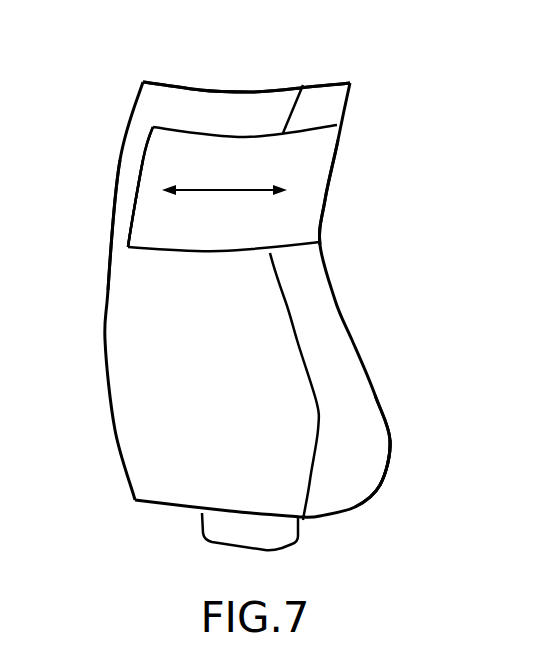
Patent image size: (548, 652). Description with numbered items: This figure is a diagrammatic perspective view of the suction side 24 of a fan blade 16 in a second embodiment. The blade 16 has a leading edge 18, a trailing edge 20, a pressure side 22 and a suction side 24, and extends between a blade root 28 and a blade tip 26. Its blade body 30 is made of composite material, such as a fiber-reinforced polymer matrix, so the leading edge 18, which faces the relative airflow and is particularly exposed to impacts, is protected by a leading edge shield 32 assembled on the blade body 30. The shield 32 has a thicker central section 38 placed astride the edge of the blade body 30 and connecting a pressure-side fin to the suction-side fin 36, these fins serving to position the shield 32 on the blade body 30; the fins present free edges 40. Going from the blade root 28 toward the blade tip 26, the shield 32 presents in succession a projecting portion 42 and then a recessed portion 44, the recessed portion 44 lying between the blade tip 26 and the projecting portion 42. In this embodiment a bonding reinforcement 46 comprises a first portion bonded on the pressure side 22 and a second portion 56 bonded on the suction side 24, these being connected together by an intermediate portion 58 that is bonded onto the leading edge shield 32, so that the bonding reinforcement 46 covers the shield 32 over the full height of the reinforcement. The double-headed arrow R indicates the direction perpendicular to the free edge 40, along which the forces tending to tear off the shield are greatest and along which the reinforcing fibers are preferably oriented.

The blade 16 is at (248, 310).
The leading edge 18 is at (378, 379).
The trailing edge 20 is at (105, 292).
The pressure side 22 is at (219, 88).
The suction side 24 is at (125, 191).
The blade tip 26 is at (277, 86).
The blade root 28 is at (309, 550).
The blade body 30 is at (130, 417).
The leading edge shield 32 is at (398, 468).
The suction-side fin 36 is at (305, 84).
The central section 38 is at (337, 83).
The free edge 40 is at (318, 412).
The projecting portion 42 is at (397, 417).
The recessed portion 44 is at (336, 243).
The bonding reinforcement 46 is at (157, 146).
The second portion 56 is at (147, 213).
The intermediate portion 58 is at (318, 192).